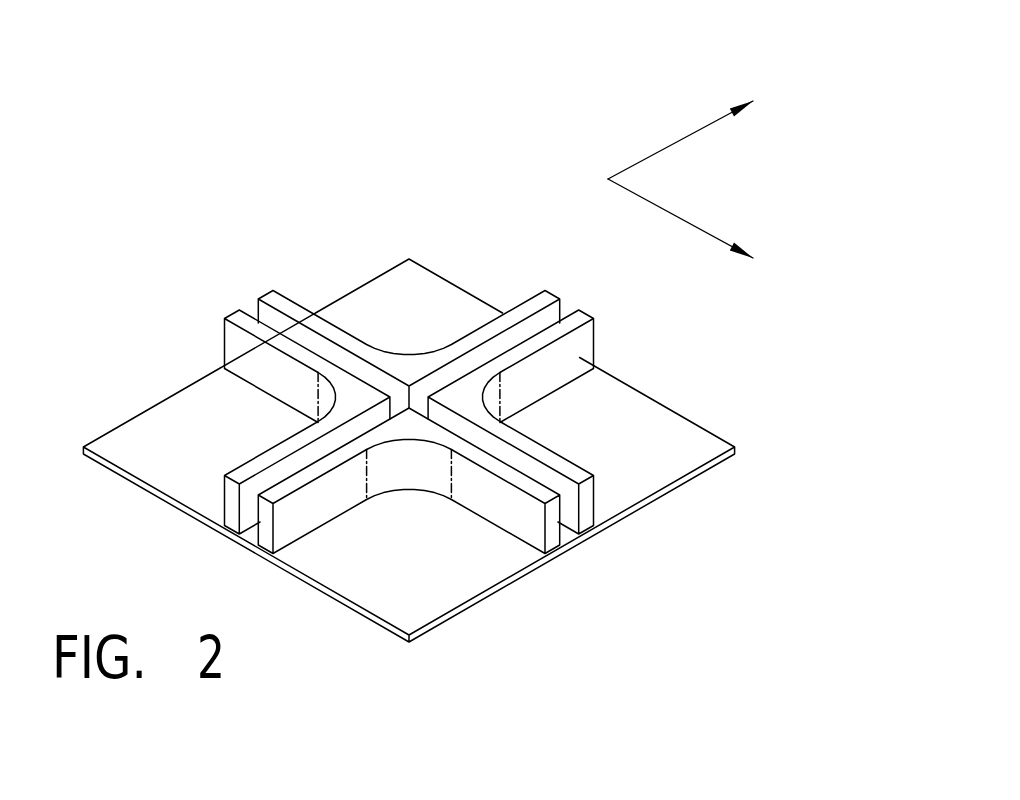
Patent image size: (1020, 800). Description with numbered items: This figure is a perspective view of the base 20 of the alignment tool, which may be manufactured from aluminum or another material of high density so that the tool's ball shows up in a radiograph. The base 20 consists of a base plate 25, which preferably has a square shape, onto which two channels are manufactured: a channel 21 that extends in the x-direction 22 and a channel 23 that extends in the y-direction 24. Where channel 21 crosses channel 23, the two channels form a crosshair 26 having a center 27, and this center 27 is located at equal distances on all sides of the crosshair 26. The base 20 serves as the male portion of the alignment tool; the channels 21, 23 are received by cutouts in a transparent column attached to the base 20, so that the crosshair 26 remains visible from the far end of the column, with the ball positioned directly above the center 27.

The base 20 is at (233, 77).
The channel 21 is at (245, 303).
The x-direction 22 is at (733, 231).
The channel 23 is at (571, 305).
The y-direction 24 is at (730, 130).
The base plate 25 is at (652, 422).
The crosshair 26 is at (512, 512).
The center 27 is at (409, 386).